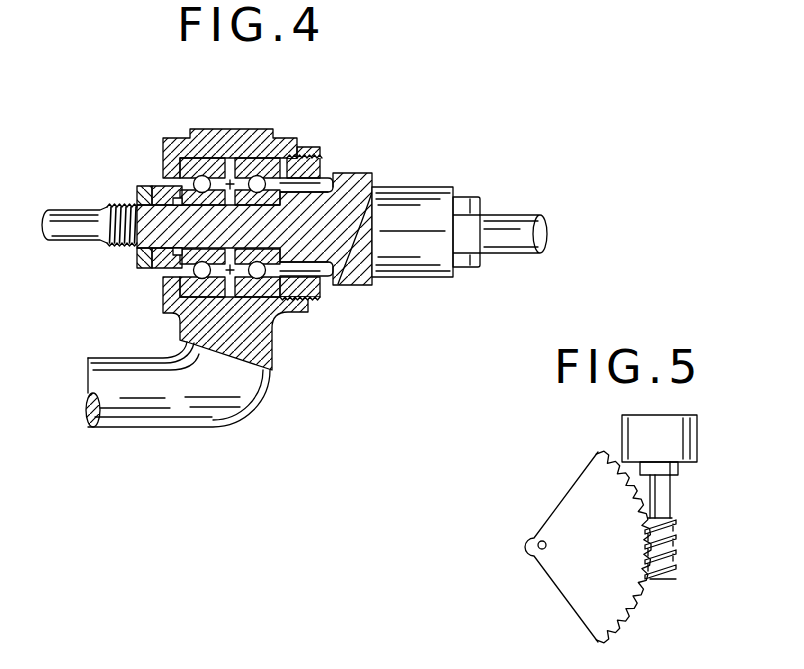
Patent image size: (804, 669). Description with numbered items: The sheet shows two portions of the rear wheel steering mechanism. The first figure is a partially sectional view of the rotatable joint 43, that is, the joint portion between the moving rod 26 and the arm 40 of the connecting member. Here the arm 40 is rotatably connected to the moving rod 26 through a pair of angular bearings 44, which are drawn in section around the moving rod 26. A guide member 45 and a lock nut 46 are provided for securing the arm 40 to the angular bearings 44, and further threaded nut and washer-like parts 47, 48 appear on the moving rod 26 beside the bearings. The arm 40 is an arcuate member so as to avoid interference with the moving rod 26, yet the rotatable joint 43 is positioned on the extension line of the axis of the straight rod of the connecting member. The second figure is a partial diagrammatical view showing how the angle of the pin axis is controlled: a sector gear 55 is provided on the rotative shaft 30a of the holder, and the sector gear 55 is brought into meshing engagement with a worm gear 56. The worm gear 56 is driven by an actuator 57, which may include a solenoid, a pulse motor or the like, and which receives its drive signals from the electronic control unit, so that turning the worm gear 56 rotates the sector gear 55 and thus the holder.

In FIG. 4, the moving rod 26 is at (47, 243).
In FIG. 4, the arm 40 is at (212, 415).
In FIG. 4, the rotatable joint 43 is at (338, 146).
In FIG. 4, the angular bearings 44 is at (180, 285).
In FIG. 4, the guide member 45 is at (331, 160).
In FIG. 4, the lock nut 46 is at (303, 147).
In FIG. 4, the nut 47 is at (160, 186).
In FIG. 4, the washer 48 is at (137, 199).
In FIG. 5, the sector gear 55 is at (558, 581).
In FIG. 5, the rotative shaft 30a is at (538, 544).
In FIG. 5, the worm gear 56 is at (679, 558).
In FIG. 5, the actuator 57 is at (690, 444).